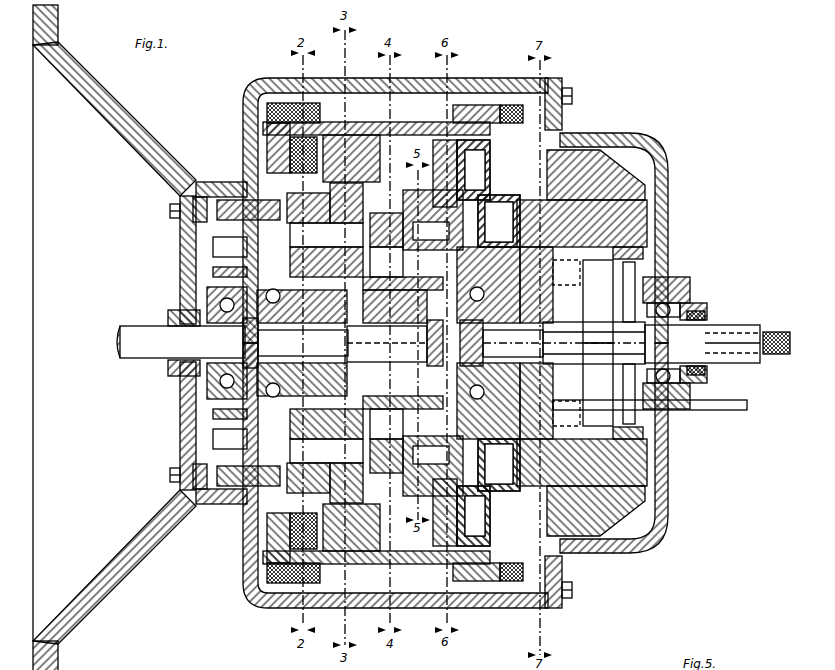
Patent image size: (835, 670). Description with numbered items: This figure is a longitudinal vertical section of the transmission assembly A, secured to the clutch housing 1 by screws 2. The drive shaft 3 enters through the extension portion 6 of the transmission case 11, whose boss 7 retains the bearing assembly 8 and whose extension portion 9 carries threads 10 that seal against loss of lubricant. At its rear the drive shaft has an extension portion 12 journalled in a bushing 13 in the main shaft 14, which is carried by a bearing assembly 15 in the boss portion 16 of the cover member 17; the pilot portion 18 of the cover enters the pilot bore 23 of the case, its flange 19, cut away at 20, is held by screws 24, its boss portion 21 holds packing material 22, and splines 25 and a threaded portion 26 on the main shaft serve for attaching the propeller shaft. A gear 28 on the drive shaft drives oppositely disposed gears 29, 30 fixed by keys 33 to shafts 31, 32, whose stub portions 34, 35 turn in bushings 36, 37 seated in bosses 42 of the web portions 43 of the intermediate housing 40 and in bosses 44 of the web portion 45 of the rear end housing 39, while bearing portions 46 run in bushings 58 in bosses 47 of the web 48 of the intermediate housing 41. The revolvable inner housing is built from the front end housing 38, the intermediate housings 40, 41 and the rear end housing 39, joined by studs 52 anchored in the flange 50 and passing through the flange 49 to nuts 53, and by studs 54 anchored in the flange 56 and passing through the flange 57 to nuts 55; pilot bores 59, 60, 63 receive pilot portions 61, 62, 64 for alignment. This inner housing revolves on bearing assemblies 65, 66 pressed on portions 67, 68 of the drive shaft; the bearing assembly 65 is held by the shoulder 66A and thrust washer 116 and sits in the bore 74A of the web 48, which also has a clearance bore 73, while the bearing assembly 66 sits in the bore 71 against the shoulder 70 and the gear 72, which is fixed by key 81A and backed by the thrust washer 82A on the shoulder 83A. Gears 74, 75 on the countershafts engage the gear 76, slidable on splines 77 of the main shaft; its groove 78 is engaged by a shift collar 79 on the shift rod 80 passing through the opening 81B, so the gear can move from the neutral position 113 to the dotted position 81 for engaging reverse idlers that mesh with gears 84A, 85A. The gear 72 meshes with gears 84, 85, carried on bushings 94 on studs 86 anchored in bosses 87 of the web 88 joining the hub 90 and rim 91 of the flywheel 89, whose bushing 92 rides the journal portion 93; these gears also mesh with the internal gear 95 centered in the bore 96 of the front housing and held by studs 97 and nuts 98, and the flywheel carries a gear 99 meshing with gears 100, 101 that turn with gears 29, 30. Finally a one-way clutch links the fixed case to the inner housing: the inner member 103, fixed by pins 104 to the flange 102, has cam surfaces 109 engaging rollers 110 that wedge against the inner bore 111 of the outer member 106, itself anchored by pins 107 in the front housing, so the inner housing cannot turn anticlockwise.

The clutch housing 1 is at (125, 113).
The screws 2 is at (168, 207).
The drive shaft 3 is at (123, 330).
The extension portion 6 is at (203, 183).
The boss 7 is at (225, 395).
The bearing assembly 8 is at (215, 385).
The extension portion 9 is at (175, 310).
The threads 10 is at (170, 366).
The transmission case 11 is at (255, 95).
The stub or extension portion 12 is at (558, 343).
The bushing 13 is at (530, 338).
The main or driven shaft 14 is at (718, 326).
The bearing assembly 15 is at (690, 300).
The boss portion 16 is at (680, 290).
The cover member 17 is at (570, 150).
The pilot portion 18 is at (520, 105).
The flange 19 is at (562, 633).
The cut-away portion 20 is at (555, 85).
The boss portion 21 is at (700, 310).
The packing material 22 is at (705, 320).
The pilot bore 23 is at (530, 95).
The screws 24 is at (572, 92).
The splines 25 is at (745, 345).
The threaded portion 26 is at (780, 332).
The gear 28 is at (435, 320).
The gear 29 is at (420, 125).
The gear 30 is at (500, 565).
The shaft 31 is at (595, 195).
The shaft 32 is at (600, 510).
The keys 33 is at (425, 215).
The stub or extension portion 34 is at (375, 232).
The stub or extension portion 35 is at (645, 215).
The bushings 36 is at (385, 258).
The bushings 37 is at (645, 205).
The front end housing member 38 is at (247, 115).
The rear end housing member 39 is at (600, 195).
The intermediate housing member 40 is at (345, 125).
The intermediate housing member 41 is at (510, 112).
The bosses 42 is at (390, 230).
The annular flange or web portions 43 is at (385, 130).
The bosses 44 is at (645, 195).
The flange or web portion 45 is at (665, 160).
The bearing portions 46 is at (508, 213).
The bosses 47 is at (490, 182).
The web or flange portion 48 is at (492, 160).
The flange portion 49 is at (520, 570).
The flange 50 is at (505, 110).
The studs 52 is at (515, 115).
The nuts 53 is at (556, 105).
The studs 54 is at (286, 108).
The nuts 55 is at (282, 112).
The flange 56 is at (290, 100).
The flange 57 is at (270, 605).
The bushings 58 is at (506, 240).
The pilot bore 59 is at (320, 112).
The pilot bore 60 is at (460, 110).
The pilot portion 61 is at (315, 122).
The pilot portion 62 is at (462, 118).
The pilot bore 63 is at (560, 130).
The pilot portion 64 is at (565, 140).
The bearing assembly 65 is at (487, 294).
The bearing assembly 66 is at (280, 334).
The shoulder 66A is at (480, 349).
The portion of drive shaft 67 is at (468, 322).
The portion of drive shaft 68 is at (262, 332).
The shoulder 70 is at (213, 272).
The bore 71 is at (215, 408).
The gear 72 is at (300, 364).
The opening or bore 73 is at (490, 388).
The gear 74 is at (575, 160).
The bore 74A is at (492, 415).
The gear 75 is at (585, 520).
The gear 76 is at (562, 258).
The splines 77 is at (582, 368).
The groove 78 is at (578, 292).
The shift collar 79 is at (560, 405).
The draft member or shift rod 80 is at (738, 411).
The shifted position of gear 81 is at (655, 262).
The key 81A is at (300, 340).
The opening 81B is at (690, 420).
The thrust washer 82A is at (350, 322).
The shoulder 83A is at (350, 358).
The gear 84 is at (322, 293).
The gear 84A is at (630, 170).
The gear 85 is at (215, 420).
The gear 85A is at (640, 530).
The studs or shafts 86 is at (340, 207).
The bosses 87 is at (340, 276).
The web or flange 88 is at (365, 283).
The flywheel or idler bracket member 89 is at (350, 140).
The hub 90 is at (412, 360).
The rim portion 91 is at (350, 575).
The bushing 92 is at (410, 322).
The journal portion 93 is at (440, 366).
The bushings 94 is at (308, 236).
The internal gear 95 is at (270, 555).
The bore 96 is at (270, 130).
The studs 97 is at (275, 145).
The nuts 98 is at (293, 155).
The gear 99 is at (420, 332).
The gear 100 is at (395, 125).
The gear 101 is at (420, 565).
The flange 102 is at (205, 278).
The inner member or cam 103 is at (210, 262).
The pins 104 is at (215, 270).
The outer member 106 is at (215, 445).
The pins 107 is at (217, 210).
The cam surfaces 109 is at (222, 255).
The rollers 110 is at (215, 247).
The inner bore or annular surface 111 is at (222, 245).
The neutral position of gear 113 is at (575, 196).
The thrust washer 116 is at (490, 300).
The transmission assembly A is at (557, 95).